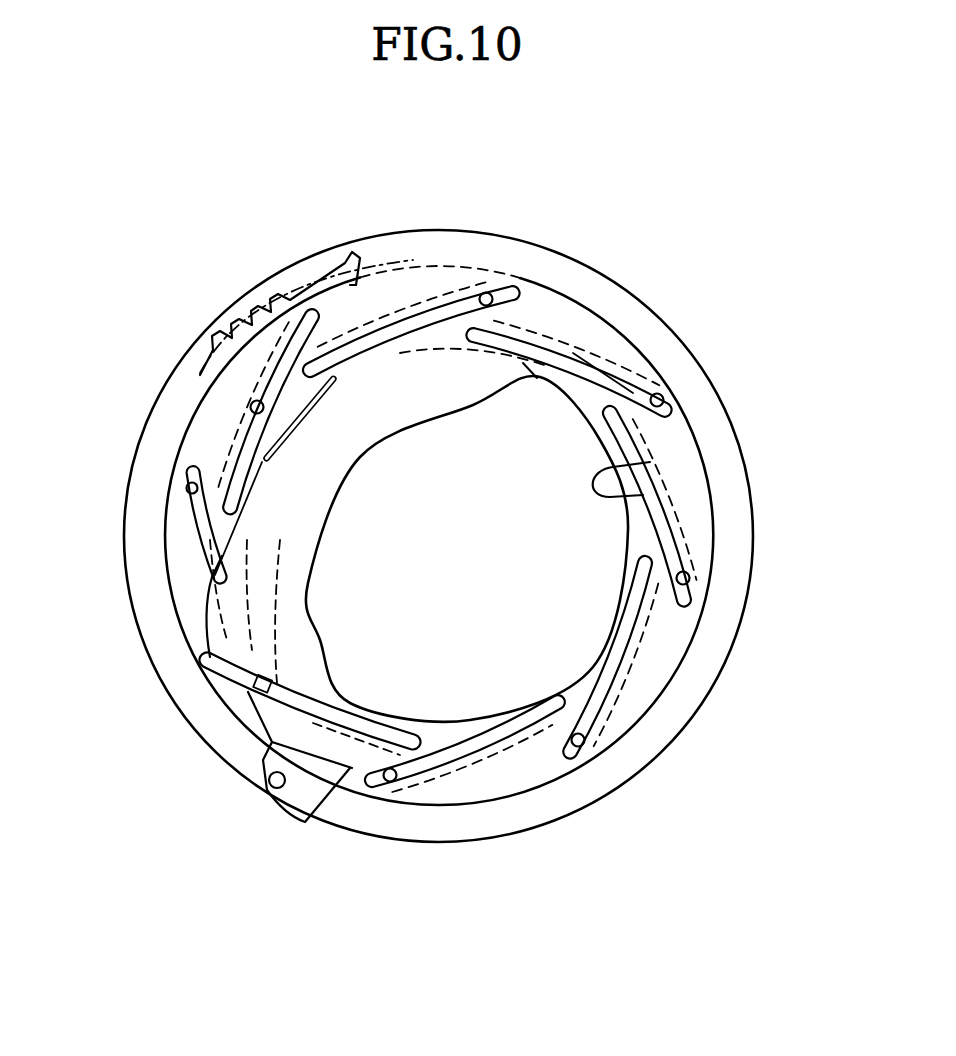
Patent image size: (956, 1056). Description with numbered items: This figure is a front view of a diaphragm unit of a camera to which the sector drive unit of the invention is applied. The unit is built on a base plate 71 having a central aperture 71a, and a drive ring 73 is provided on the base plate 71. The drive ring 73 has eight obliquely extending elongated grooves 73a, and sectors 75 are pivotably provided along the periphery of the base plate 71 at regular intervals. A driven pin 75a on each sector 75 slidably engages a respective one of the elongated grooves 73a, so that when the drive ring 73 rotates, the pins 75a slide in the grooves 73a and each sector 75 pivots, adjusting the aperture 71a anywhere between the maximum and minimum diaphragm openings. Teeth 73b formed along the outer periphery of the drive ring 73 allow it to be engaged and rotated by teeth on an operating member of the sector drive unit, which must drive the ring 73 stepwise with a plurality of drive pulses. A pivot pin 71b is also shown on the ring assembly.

The base plate 71 is at (185, 712).
The aperture 71a is at (643, 495).
The pivot pin 71b is at (285, 792).
The drive ring 73 is at (165, 592).
The elongated grooves 73a is at (490, 297).
The teeth 73b is at (342, 262).
The sectors 75 is at (425, 417).
The driven pins 75a is at (250, 700).